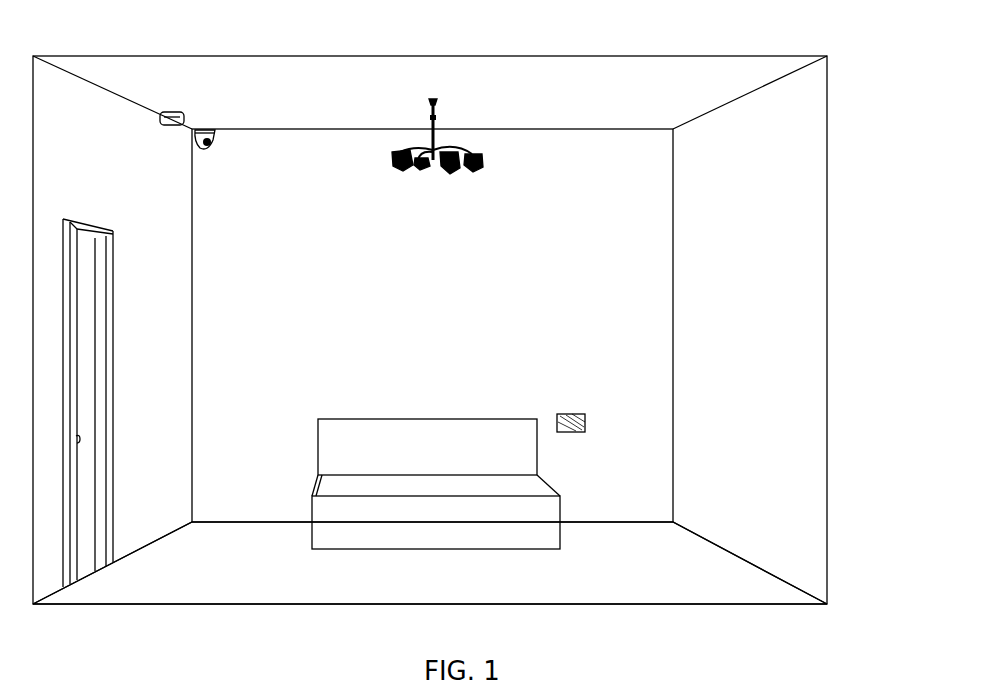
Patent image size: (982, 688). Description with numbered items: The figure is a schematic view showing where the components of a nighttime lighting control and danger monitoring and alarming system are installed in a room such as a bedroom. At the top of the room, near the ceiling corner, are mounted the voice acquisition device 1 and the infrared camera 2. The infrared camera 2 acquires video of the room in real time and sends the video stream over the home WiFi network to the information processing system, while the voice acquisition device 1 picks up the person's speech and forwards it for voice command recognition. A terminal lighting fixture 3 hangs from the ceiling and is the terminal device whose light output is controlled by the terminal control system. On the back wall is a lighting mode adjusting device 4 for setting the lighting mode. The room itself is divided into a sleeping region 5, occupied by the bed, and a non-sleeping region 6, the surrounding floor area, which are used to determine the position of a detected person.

The voice acquisition device 1 is at (165, 112).
The infrared camera 2 is at (213, 130).
The terminal lighting fixture 3 is at (440, 125).
The lighting mode adjusting device 4 is at (585, 413).
The sleeping region 5 is at (453, 487).
The non-sleeping region 6 is at (452, 585).